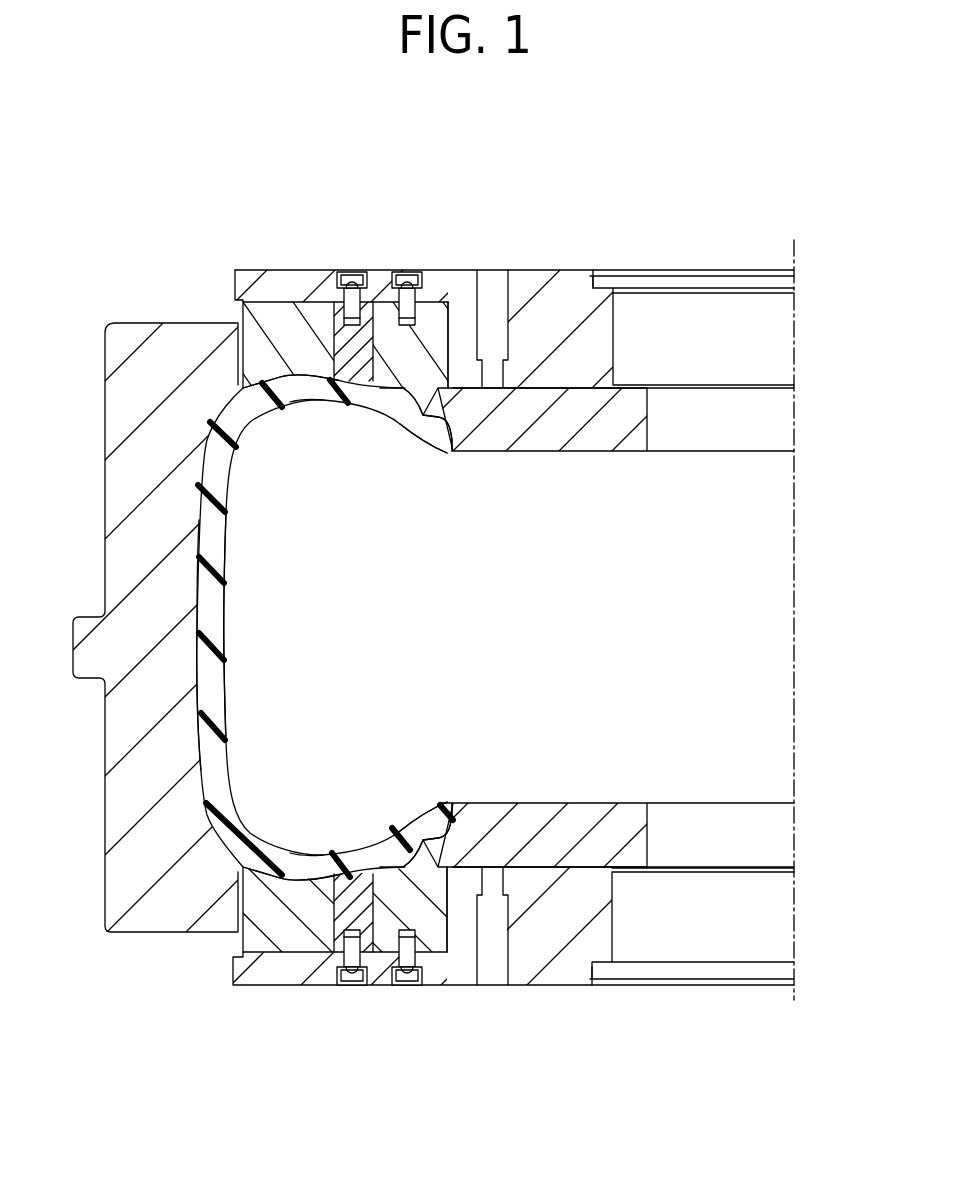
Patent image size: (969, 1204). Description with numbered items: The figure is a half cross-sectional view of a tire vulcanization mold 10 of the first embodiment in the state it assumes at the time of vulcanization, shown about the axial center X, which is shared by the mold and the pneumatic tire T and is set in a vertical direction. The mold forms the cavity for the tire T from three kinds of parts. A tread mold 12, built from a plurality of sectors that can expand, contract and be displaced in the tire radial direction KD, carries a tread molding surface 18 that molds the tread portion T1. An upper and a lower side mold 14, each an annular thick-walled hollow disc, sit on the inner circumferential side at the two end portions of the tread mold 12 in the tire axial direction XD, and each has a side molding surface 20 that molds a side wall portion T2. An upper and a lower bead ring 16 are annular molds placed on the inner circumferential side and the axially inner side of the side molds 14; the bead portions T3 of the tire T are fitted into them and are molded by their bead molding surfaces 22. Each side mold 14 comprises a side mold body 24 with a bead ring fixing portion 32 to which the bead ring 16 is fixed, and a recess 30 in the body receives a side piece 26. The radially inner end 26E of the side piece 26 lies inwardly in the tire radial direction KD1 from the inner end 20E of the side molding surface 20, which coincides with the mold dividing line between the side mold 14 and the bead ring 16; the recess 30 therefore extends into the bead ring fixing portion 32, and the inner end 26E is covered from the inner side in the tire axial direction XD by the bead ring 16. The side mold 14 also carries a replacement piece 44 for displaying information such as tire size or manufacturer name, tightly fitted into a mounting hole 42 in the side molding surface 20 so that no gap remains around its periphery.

The tire vulcanization mold 10 is at (476, 191).
The tread mold 12 is at (122, 557).
The side mold 14 is at (525, 280).
The bead ring 16 is at (613, 433).
The tread molding surface 18 is at (203, 707).
The side molding surface 20 is at (278, 383).
The inner end in the tire radial direction of the side molding surface 20E is at (418, 420).
The bead molding surface 22 is at (448, 443).
The side mold body 24 is at (585, 274).
The side piece 26 is at (257, 317).
The inner end in the tire radial direction of the side piece 26E is at (450, 343).
The recess 30 is at (270, 305).
The bead ring fixing portion 32 is at (553, 390).
The mounting hole 42 is at (375, 935).
The replacement piece 44 is at (337, 347).
The pneumatic tire T is at (230, 627).
The tread portion T1 is at (217, 682).
The side wall portion T2 is at (308, 404).
The bead portion T3 is at (430, 442).
The tire radial direction KD is at (688, 615).
The inward tire radial direction KD1 is at (558, 645).
The tire axial direction XD is at (756, 588).
The axial center X is at (797, 263).